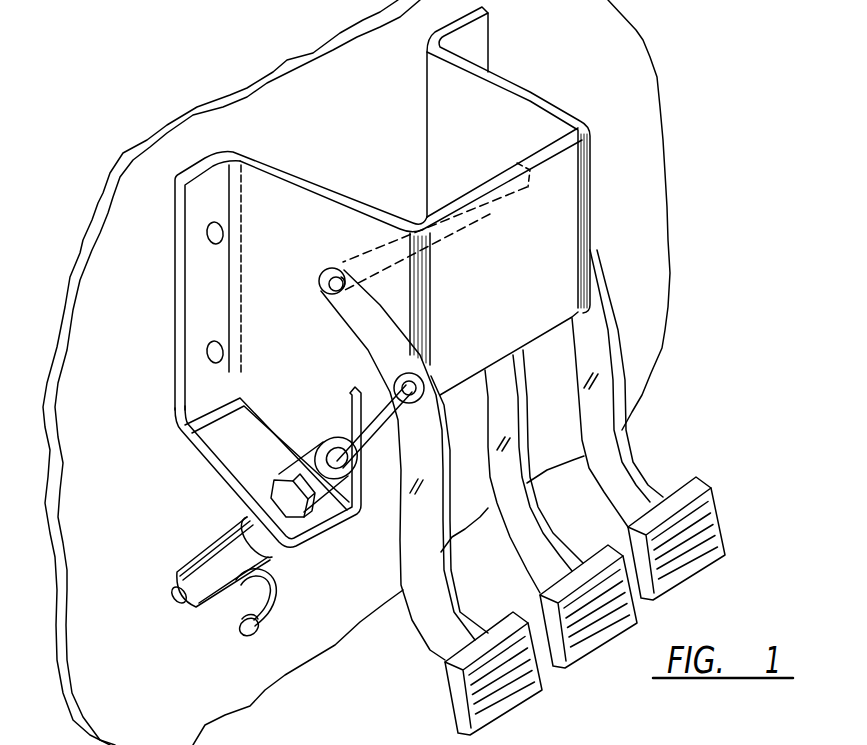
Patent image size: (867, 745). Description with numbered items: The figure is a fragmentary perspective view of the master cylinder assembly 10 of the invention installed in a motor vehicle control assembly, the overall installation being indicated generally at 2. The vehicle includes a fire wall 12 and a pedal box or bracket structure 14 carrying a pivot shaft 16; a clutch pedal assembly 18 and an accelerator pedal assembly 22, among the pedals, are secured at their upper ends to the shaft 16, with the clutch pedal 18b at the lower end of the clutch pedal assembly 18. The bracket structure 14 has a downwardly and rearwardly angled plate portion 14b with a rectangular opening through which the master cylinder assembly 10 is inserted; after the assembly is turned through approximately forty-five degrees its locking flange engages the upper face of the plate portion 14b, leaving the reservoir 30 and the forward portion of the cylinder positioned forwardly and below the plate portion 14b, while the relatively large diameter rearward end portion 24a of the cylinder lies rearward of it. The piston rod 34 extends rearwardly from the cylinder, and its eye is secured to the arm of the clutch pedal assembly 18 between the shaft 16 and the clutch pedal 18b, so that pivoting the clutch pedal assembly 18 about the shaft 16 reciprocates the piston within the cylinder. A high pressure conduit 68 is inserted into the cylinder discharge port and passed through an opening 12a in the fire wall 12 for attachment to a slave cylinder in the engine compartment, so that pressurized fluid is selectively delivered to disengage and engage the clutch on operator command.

The pedal assembly 2 is at (148, 550).
The master cylinder assembly 10 is at (181, 632).
The fire wall 12 is at (574, 30).
The opening 12a is at (240, 632).
The bracket structure 14 is at (592, 108).
The plate portion 14b is at (237, 448).
The pivot shaft 16 is at (318, 290).
The clutch pedal assembly 18 is at (424, 626).
The clutch pedal 18b is at (515, 680).
The accelerator pedal assembly 22 is at (500, 479).
The rearward end portion 24a is at (302, 447).
The reservoir 30 is at (213, 552).
The piston rod 34 is at (372, 426).
The high pressure conduit 68 is at (275, 598).